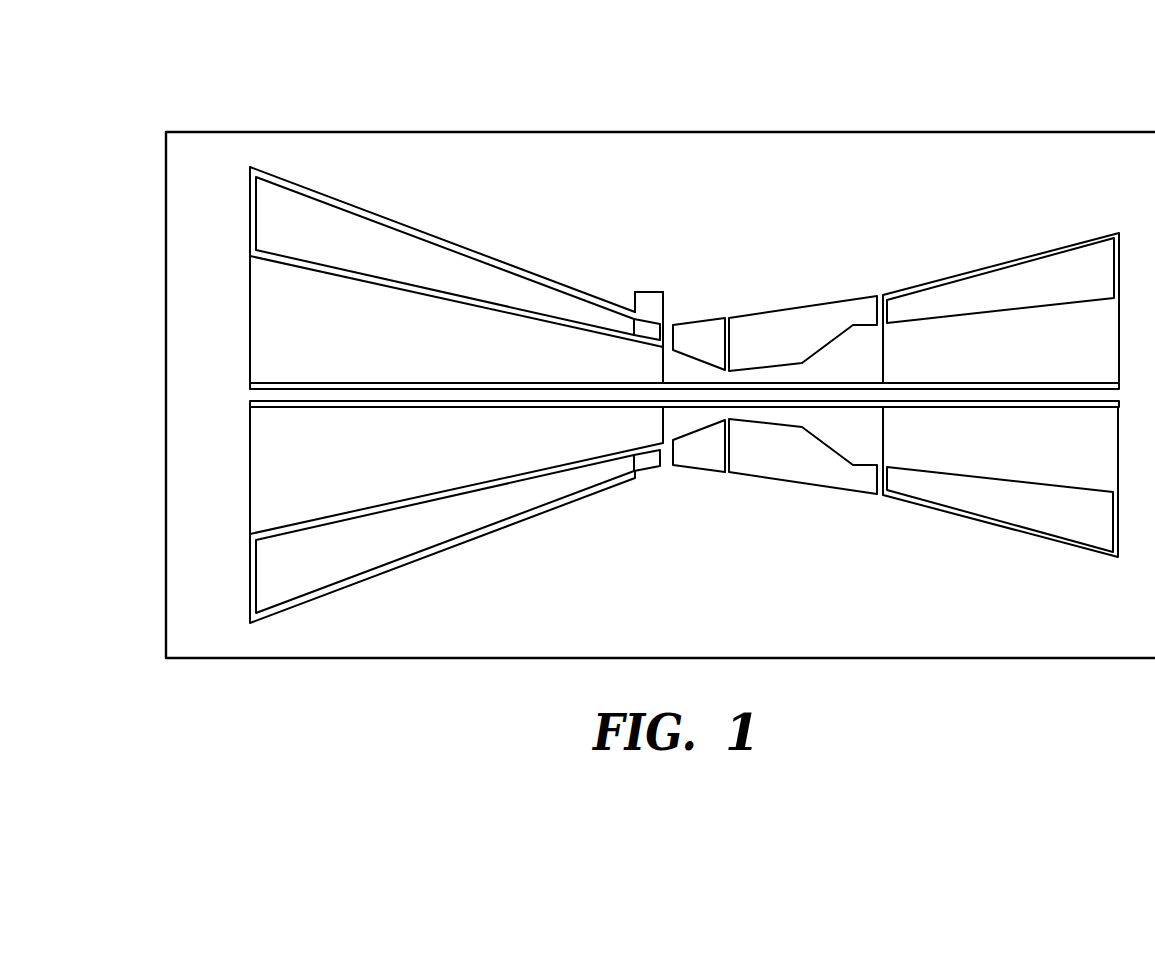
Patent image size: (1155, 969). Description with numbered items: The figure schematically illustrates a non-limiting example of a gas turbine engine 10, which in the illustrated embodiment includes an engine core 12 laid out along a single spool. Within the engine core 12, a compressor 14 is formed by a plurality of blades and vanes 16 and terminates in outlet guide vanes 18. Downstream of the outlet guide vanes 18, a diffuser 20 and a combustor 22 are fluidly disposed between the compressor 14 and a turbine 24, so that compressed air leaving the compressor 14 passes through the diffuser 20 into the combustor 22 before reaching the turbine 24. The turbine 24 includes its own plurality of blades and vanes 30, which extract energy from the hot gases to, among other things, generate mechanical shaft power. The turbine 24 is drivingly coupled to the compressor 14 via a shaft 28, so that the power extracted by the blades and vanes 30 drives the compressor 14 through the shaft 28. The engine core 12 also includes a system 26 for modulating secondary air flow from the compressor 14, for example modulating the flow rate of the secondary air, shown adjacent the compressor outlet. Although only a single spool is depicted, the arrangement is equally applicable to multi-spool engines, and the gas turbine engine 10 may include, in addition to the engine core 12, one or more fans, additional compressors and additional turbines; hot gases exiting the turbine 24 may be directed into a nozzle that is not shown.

The gas turbine engine 10 is at (1077, 132).
The engine core 12 is at (926, 193).
The compressor 14 is at (250, 505).
The blades and vanes 16 is at (359, 571).
The outlet guide vanes 18 is at (636, 469).
The diffuser 20 is at (692, 468).
The combustor 22 is at (776, 311).
The turbine 24 is at (1119, 473).
The system for modulating secondary air flow 26 is at (641, 292).
The shaft 28 is at (680, 383).
The blades and vanes 30 is at (936, 500).